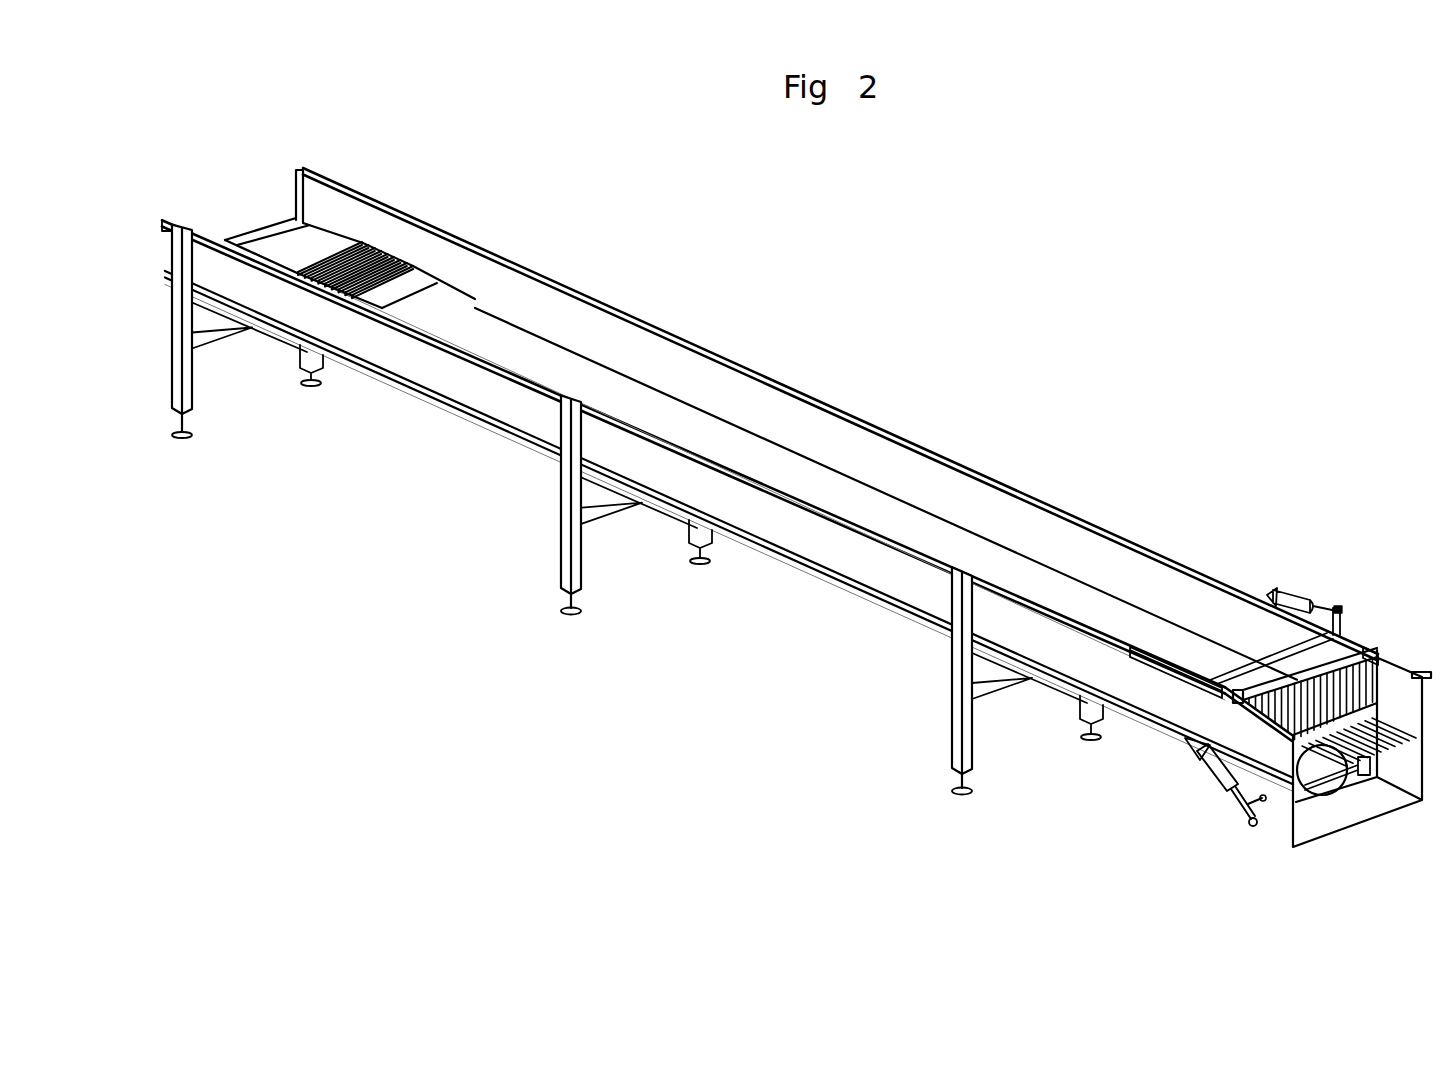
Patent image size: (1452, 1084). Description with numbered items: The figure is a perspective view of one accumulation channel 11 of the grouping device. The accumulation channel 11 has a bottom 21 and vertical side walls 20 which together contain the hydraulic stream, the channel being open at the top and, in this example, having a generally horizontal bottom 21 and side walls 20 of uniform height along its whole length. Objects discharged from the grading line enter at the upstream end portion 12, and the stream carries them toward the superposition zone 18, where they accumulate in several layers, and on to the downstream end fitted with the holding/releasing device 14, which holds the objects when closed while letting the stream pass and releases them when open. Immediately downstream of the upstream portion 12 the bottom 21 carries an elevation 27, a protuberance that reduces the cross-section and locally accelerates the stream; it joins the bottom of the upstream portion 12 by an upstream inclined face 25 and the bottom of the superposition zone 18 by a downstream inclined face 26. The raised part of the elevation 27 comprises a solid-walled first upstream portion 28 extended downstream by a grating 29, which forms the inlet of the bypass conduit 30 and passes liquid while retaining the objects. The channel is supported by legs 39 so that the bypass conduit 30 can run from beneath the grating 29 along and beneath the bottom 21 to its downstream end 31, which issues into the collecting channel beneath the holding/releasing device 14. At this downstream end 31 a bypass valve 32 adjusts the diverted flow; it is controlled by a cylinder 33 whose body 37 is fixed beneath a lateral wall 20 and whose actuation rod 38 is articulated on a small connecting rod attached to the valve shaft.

The accumulation channel 11 is at (795, 270).
The upstream end portion 12 is at (298, 264).
The holding/releasing device 14 is at (1375, 682).
The superposition zone 18 is at (829, 410).
The vertical side walls 20 is at (942, 478).
The bottom 21 is at (1010, 568).
The upstream inclined face 25 is at (307, 240).
The downstream inclined face 26 is at (393, 292).
The elevation 27 is at (263, 260).
The first upstream portion 28 is at (333, 248).
The grating 29 is at (395, 250).
The bypass conduit 30 is at (843, 581).
The downstream end 31 is at (1303, 789).
The bypass valve 32 is at (1320, 787).
The cylinder 33 is at (1168, 787).
The body 37 is at (1213, 772).
The actuation rod 38 is at (1240, 799).
The legs 39 is at (305, 368).